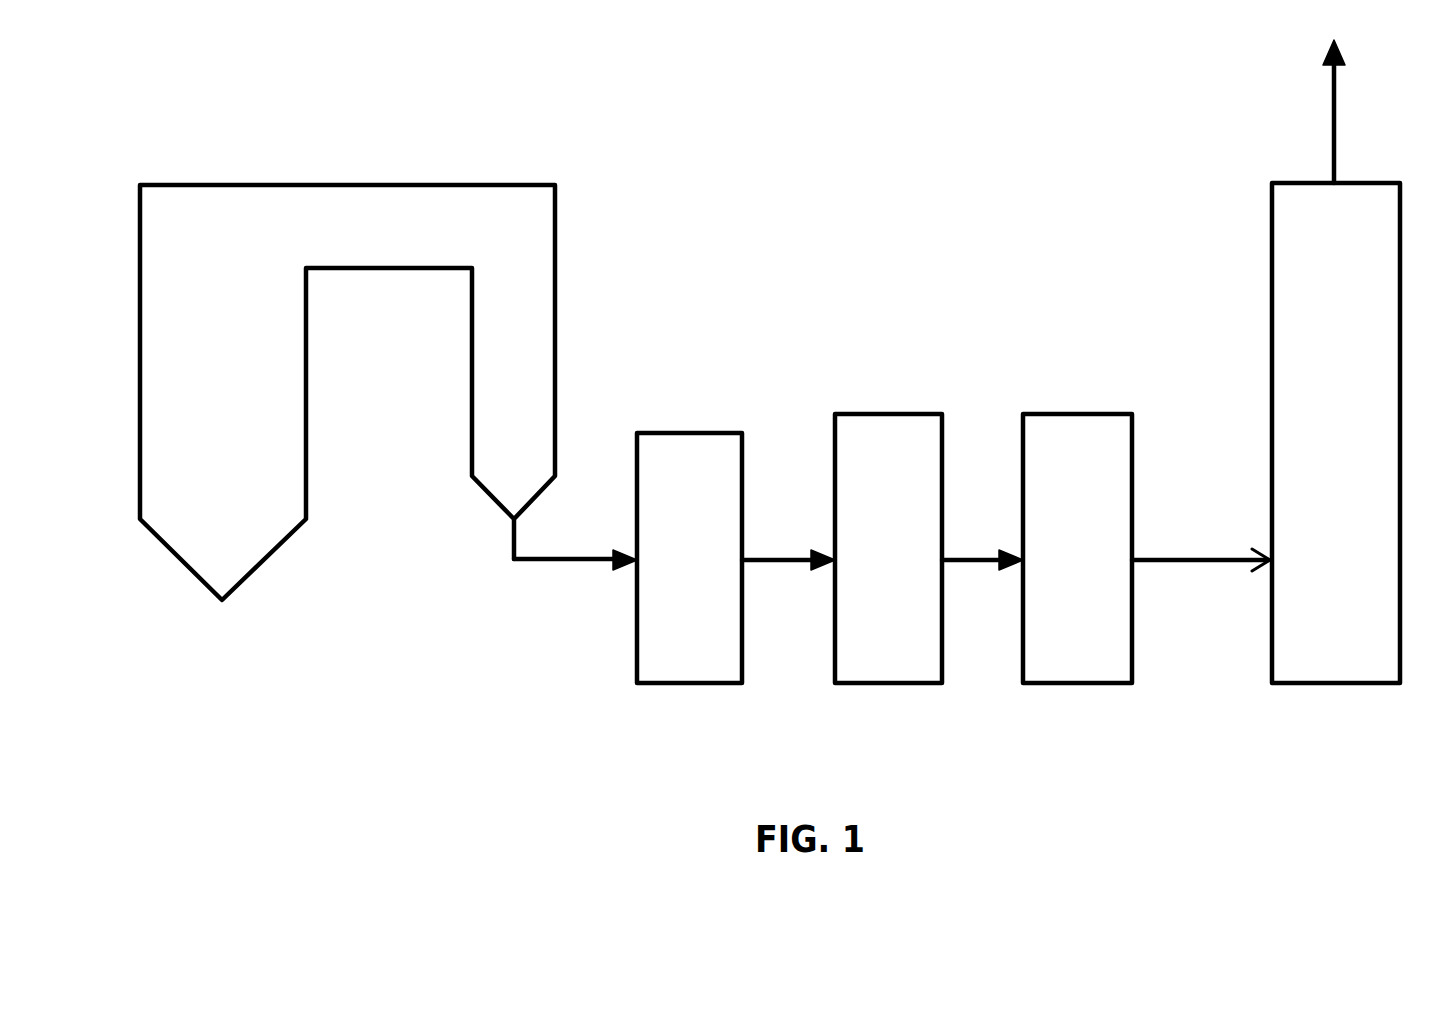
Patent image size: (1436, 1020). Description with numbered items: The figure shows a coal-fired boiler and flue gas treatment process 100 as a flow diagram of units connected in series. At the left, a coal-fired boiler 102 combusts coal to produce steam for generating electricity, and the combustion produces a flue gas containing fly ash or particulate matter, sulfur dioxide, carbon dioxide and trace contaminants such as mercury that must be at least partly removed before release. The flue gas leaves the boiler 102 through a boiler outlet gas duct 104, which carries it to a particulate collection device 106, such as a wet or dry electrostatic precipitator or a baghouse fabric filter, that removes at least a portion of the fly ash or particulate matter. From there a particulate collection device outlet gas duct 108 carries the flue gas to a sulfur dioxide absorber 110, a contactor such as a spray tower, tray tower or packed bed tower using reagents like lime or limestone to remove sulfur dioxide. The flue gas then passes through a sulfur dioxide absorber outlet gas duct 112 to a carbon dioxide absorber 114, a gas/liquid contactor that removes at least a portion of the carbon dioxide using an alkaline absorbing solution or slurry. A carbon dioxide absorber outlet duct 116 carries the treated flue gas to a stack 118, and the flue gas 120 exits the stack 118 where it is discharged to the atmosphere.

The coal-fired boiler and flue gas treatment process 100 is at (878, 207).
The coal-fired boiler 102 is at (347, 185).
The boiler outlet gas duct 104 is at (543, 562).
The particulate collection device 106 is at (650, 433).
The particulate collection device outlet gas duct 108 is at (794, 560).
The sulfur dioxide absorber 110 is at (857, 414).
The sulfur dioxide absorber outlet gas duct 112 is at (994, 560).
The carbon dioxide absorber 114 is at (1035, 414).
The carbon dioxide absorber outlet duct 116 is at (1162, 560).
The stack 118 is at (1270, 248).
The flue gas 120 is at (1335, 143).